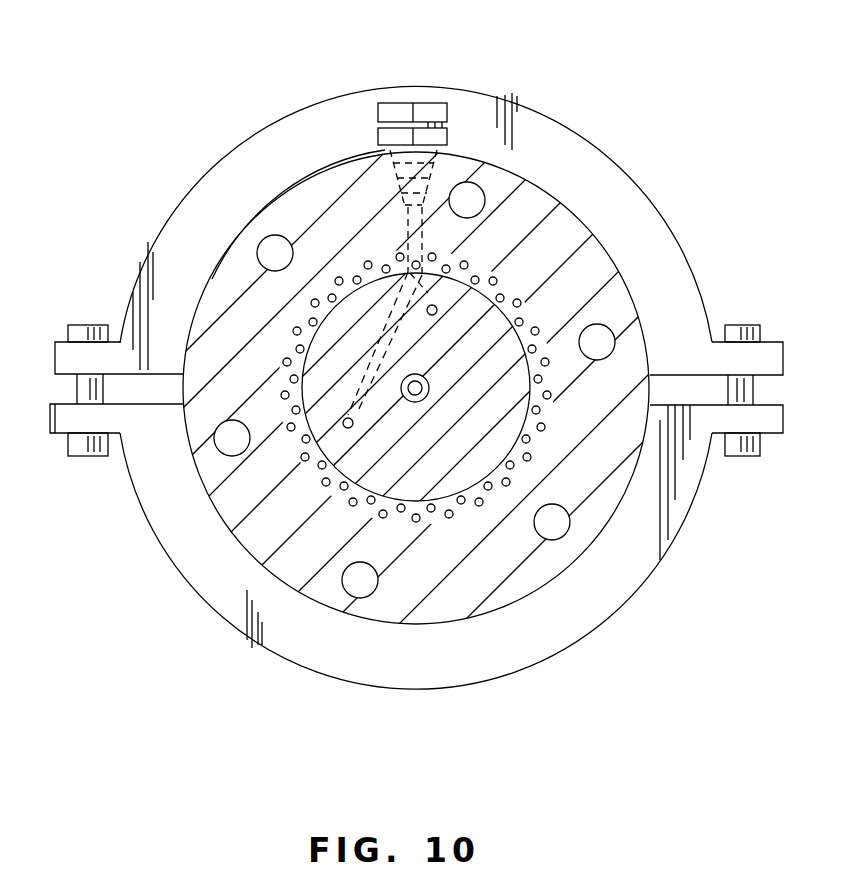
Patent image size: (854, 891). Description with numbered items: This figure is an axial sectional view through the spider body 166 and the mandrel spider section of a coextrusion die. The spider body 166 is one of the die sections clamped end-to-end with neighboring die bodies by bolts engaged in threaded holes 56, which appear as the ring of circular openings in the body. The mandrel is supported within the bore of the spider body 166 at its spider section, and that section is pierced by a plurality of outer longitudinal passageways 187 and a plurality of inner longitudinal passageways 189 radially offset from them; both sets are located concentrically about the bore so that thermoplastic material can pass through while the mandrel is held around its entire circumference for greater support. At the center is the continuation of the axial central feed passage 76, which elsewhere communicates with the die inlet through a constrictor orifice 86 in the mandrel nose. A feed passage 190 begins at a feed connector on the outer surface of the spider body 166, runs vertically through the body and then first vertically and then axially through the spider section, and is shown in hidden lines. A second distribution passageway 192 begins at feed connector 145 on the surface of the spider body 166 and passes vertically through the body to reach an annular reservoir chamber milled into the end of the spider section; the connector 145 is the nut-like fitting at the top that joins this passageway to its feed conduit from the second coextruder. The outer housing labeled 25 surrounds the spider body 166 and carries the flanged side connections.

The housing ring 25 is at (208, 230).
The threaded holes 56 is at (596, 324).
The central feed passage 76 is at (407, 400).
The constrictor orifice 86 is at (408, 400).
The feed connector 145 is at (405, 112).
The spider body 166 is at (236, 364).
The outer longitudinal passageways 187 is at (479, 494).
The inner longitudinal passageways 189 is at (343, 490).
The feed passage 190 is at (383, 356).
The second distribution passageway 192 is at (432, 305).